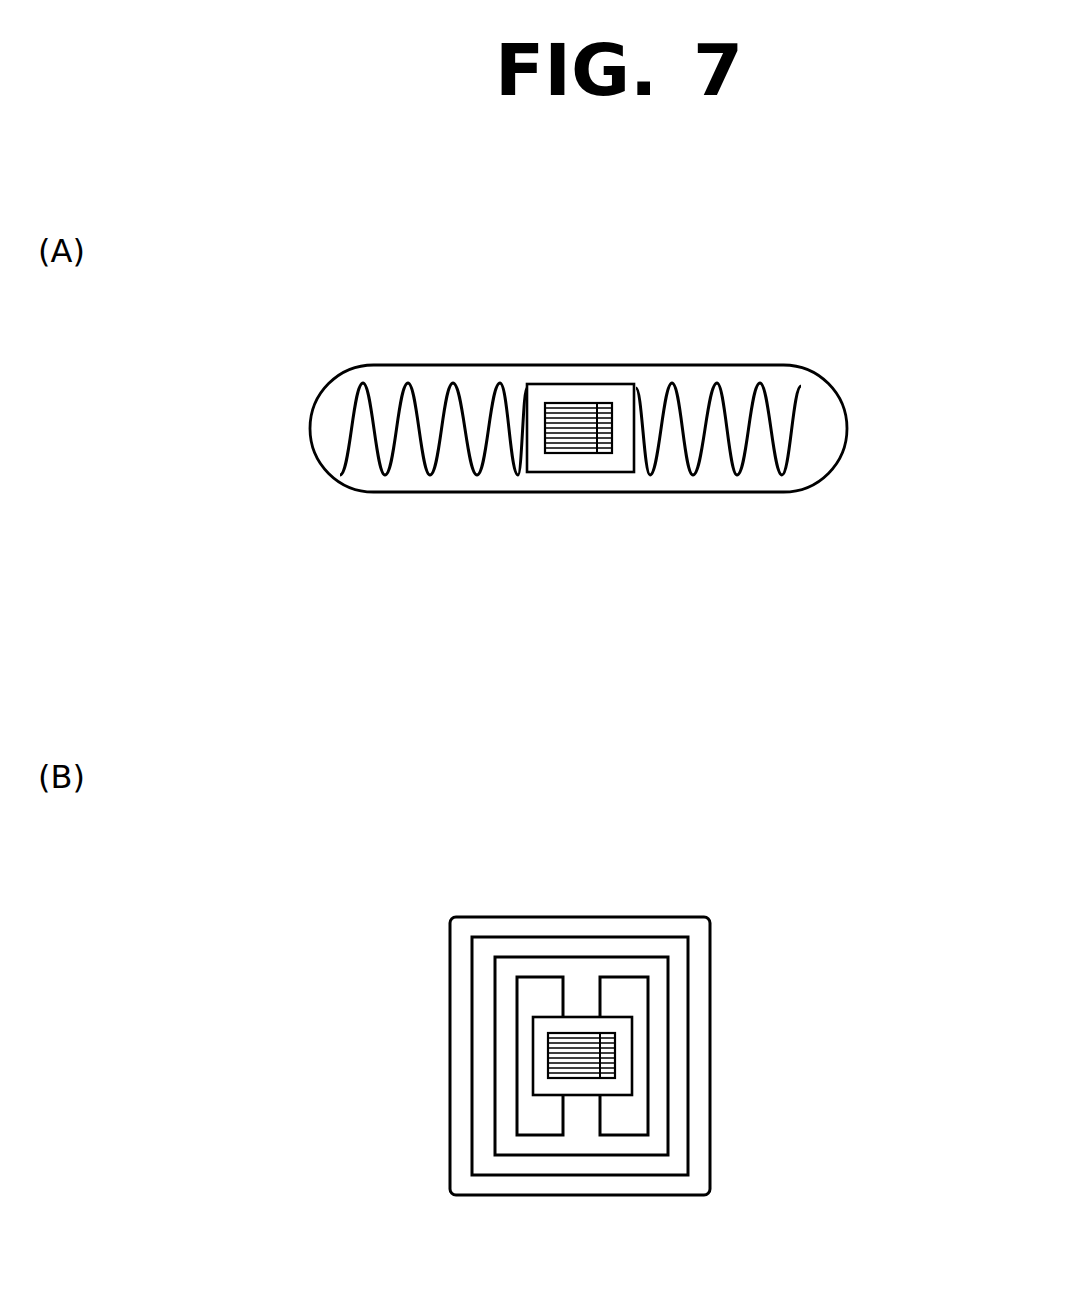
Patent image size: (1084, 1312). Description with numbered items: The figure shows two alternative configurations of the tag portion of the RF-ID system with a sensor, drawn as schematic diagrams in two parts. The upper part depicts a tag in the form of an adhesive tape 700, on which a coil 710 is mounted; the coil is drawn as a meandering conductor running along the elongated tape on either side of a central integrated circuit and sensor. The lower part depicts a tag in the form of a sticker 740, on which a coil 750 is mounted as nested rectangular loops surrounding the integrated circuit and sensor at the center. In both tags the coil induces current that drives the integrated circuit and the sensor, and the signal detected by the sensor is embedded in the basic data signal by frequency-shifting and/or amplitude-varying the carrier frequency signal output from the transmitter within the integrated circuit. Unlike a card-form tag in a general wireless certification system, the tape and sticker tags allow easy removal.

The adhesive tape 700 is at (723, 365).
The coil 710 is at (793, 425).
The sticker 740 is at (710, 1143).
The coil 750 is at (688, 1090).